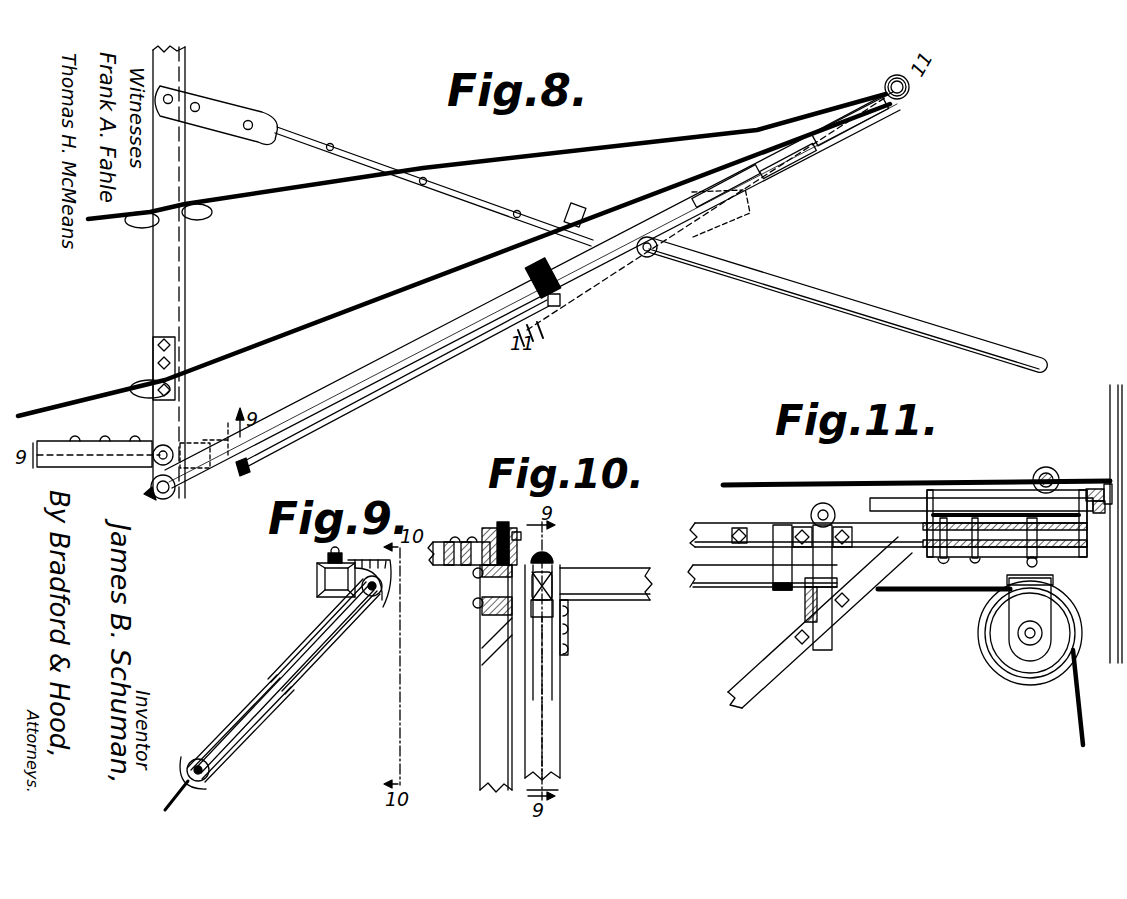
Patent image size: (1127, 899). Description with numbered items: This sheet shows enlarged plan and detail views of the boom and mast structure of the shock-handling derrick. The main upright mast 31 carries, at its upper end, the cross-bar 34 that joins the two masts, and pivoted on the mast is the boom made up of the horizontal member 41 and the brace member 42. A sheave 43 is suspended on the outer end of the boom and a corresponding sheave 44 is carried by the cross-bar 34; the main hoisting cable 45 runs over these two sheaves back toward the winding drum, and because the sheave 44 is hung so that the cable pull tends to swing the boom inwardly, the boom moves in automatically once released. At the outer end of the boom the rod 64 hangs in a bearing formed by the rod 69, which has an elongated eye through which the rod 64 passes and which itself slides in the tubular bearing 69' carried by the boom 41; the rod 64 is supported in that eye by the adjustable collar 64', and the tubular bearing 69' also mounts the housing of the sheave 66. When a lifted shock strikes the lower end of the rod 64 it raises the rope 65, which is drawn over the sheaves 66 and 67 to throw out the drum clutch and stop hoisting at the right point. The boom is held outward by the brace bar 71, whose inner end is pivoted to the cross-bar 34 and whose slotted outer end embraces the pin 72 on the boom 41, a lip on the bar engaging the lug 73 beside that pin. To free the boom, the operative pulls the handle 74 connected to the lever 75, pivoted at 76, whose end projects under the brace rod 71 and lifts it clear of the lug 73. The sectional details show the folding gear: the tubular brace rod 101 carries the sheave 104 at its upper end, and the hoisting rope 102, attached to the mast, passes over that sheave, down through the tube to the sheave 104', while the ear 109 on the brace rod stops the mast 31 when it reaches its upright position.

In FIG. 10, the mast 31 is at (480, 710).
In FIG. 8, the cross-bar 34 is at (186, 291).
In FIG. 9, the cross-bar 34 is at (318, 579).
In FIG. 10, the cross-bar 34 is at (641, 600).
In FIG. 8, the horizontal boom member 41 is at (357, 373).
In FIG. 10, the horizontal boom member 41 is at (438, 545).
In FIG. 11, the horizontal boom member 41 is at (713, 523).
In FIG. 11, the brace member 42 is at (770, 687).
In FIG. 11, the sheave 43 is at (997, 667).
In FIG. 8, the sheave 44 is at (203, 212).
In FIG. 8, the main hoisting cable 45 is at (113, 227).
In FIG. 11, the main hoisting cable 45 is at (962, 595).
In FIG. 8, the rod 64 is at (904, 117).
In FIG. 11, the rod 64 is at (1092, 524).
In FIG. 8, the collar 64' is at (870, 77).
In FIG. 8, the rope 65 is at (84, 400).
In FIG. 11, the rope 65 is at (788, 479).
In FIG. 8, the sheave 66 is at (830, 130).
In FIG. 11, the sheave 66 is at (1040, 466).
In FIG. 8, the sheave 67 is at (186, 377).
In FIG. 8, the bearing rod 69 is at (819, 165).
In FIG. 11, the bearing rod 69 is at (987, 480).
In FIG. 8, the tubular bearing 69' is at (788, 179).
In FIG. 11, the tubular bearing 69' is at (1007, 504).
In FIG. 8, the brace bar 71 is at (367, 157).
In FIG. 11, the brace bar 71 is at (735, 580).
In FIG. 8, the pin 72 is at (645, 260).
In FIG. 11, the pin 72 is at (812, 510).
In FIG. 11, the lug 73 is at (817, 580).
In FIG. 8, the handle 74 is at (252, 468).
In FIG. 8, the lever 75 is at (380, 397).
In FIG. 11, the lever 75 is at (780, 580).
In FIG. 8, the pivot 76 is at (560, 298).
In FIG. 11, the pivot 76 is at (738, 528).
In FIG. 8, the tubular brace rod 101 is at (135, 460).
In FIG. 9, the tubular brace rod 101 is at (333, 650).
In FIG. 10, the tubular brace rod 101 is at (561, 742).
In FIG. 8, the hoisting rope 102 is at (180, 446).
In FIG. 9, the hoisting rope 102 is at (383, 597).
In FIG. 10, the hoisting rope 102 is at (553, 610).
In FIG. 9, the sheave 104 is at (394, 583).
In FIG. 10, the sheave 104 is at (556, 561).
In FIG. 9, the sheave 104' is at (234, 773).
In FIG. 8, the ear 109 is at (180, 495).
In FIG. 10, the ear 109 is at (497, 627).